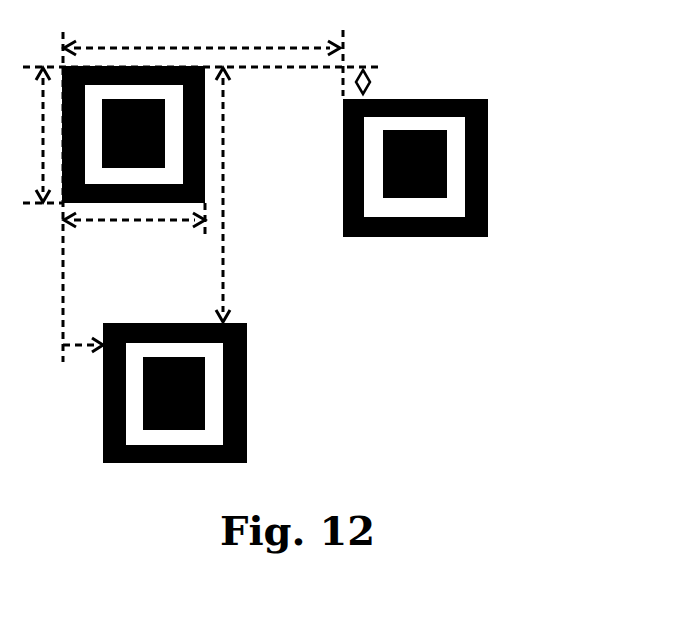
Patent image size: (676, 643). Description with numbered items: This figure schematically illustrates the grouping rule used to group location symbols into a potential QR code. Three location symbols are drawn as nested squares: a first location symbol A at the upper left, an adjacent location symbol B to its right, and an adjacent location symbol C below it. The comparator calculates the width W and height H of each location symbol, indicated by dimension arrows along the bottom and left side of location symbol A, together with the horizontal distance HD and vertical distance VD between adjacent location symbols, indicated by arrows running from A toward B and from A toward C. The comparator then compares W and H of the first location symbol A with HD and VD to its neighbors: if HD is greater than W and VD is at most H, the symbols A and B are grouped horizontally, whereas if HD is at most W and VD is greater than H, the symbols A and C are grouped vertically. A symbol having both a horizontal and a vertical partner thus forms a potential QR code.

The first location symbol A is at (133, 134).
The adjacent location symbol B is at (415, 168).
The adjacent location symbol C is at (175, 393).
The height H is at (29, 135).
The width W is at (134, 214).
The horizontal distance HD is at (201, 193).
The vertical distance VD is at (308, 195).